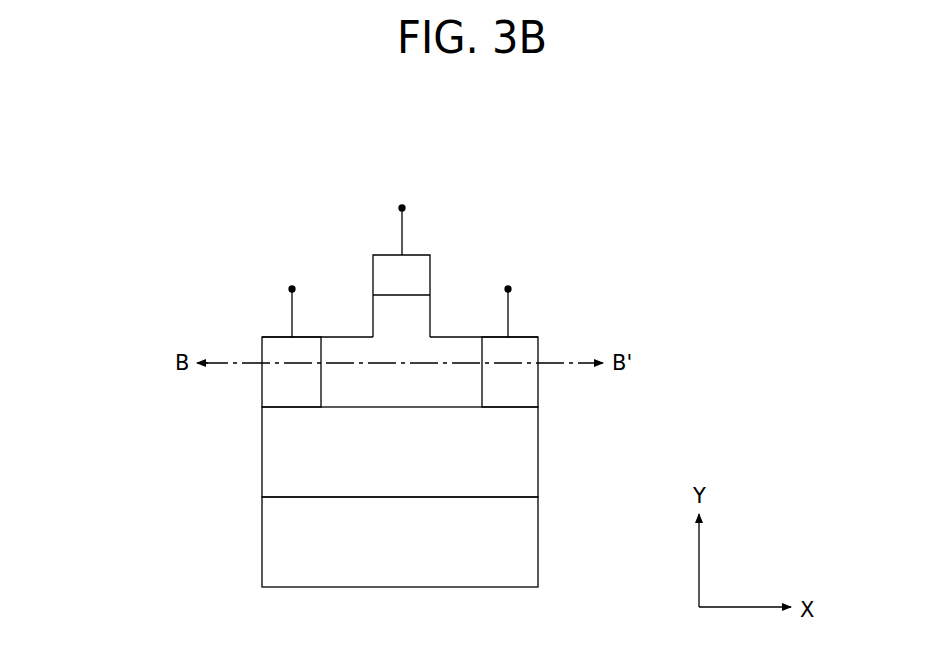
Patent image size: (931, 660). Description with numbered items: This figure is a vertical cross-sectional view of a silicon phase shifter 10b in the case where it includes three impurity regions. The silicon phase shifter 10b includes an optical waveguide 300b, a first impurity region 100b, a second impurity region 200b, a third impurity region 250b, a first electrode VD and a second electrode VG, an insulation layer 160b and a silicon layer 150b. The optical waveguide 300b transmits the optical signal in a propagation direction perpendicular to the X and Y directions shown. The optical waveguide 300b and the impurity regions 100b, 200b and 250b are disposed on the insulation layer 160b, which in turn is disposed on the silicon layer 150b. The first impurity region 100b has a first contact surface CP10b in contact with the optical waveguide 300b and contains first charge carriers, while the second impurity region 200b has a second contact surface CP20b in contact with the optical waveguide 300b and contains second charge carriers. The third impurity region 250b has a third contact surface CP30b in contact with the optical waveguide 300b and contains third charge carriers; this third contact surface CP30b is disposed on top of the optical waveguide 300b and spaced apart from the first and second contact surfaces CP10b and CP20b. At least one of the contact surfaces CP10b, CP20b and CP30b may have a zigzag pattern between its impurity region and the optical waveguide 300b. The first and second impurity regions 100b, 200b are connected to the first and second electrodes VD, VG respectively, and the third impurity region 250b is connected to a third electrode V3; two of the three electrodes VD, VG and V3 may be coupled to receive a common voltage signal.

The silicon phase shifter 10b is at (470, 133).
The first impurity region 100b is at (285, 343).
The second impurity region 200b is at (515, 343).
The optical waveguide 300b is at (377, 320).
The third impurity region 250b is at (411, 267).
The first contact surface CP10b is at (308, 337).
The second contact surface CP20b is at (483, 341).
The third contact surface CP30b is at (415, 295).
The first electrode VD is at (292, 300).
The second electrode VG is at (509, 300).
The third electrode V3 is at (401, 218).
The insulation layer 160b is at (530, 461).
The silicon layer 150b is at (530, 546).